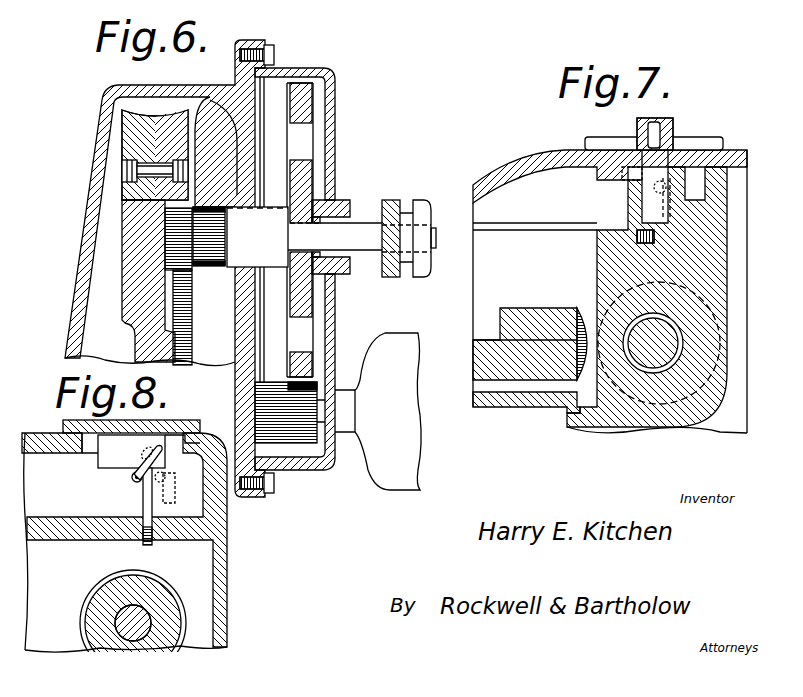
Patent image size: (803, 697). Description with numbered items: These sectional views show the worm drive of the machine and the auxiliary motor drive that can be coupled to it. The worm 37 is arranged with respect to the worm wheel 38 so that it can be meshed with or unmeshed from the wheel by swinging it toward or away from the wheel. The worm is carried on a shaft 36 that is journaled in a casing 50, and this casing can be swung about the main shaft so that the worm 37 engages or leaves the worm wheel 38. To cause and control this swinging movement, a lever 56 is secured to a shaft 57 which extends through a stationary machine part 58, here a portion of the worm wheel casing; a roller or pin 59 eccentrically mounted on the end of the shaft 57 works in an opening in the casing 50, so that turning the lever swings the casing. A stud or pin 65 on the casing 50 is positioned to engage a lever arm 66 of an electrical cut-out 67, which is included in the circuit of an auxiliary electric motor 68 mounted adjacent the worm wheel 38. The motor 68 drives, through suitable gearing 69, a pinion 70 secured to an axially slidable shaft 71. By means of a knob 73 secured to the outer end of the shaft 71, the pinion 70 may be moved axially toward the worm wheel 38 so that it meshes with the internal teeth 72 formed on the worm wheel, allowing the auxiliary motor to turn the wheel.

In FIG. 7, the shaft 36 is at (665, 337).
In FIG. 8, the shaft 36 is at (140, 630).
In FIG. 7, the worm 37 is at (730, 337).
In FIG. 6, the worm wheel 38 is at (135, 130).
In FIG. 7, the worm wheel 38 is at (557, 323).
In FIG. 8, the casing 50 is at (220, 583).
In FIG. 7, the lever 56 is at (673, 128).
In FIG. 7, the shaft 57 is at (652, 127).
In FIG. 7, the stationary machine part 58 is at (723, 150).
In FIG. 7, the roller or pin 59 is at (637, 231).
In FIG. 7, the stud or pin 65 is at (687, 217).
In FIG. 8, the stud or pin 65 is at (147, 500).
In FIG. 8, the lever arm 66 is at (132, 477).
In FIG. 8, the electrical cut-out 67 is at (133, 445).
In FIG. 6, the auxiliary electric motor 68 is at (378, 472).
In FIG. 6, the gearing 69 is at (300, 423).
In FIG. 6, the pinion 70 is at (206, 214).
In FIG. 6, the axially slidable shaft 71 is at (267, 218).
In FIG. 6, the internal teeth 72 is at (192, 309).
In FIG. 6, the knob 73 is at (412, 216).